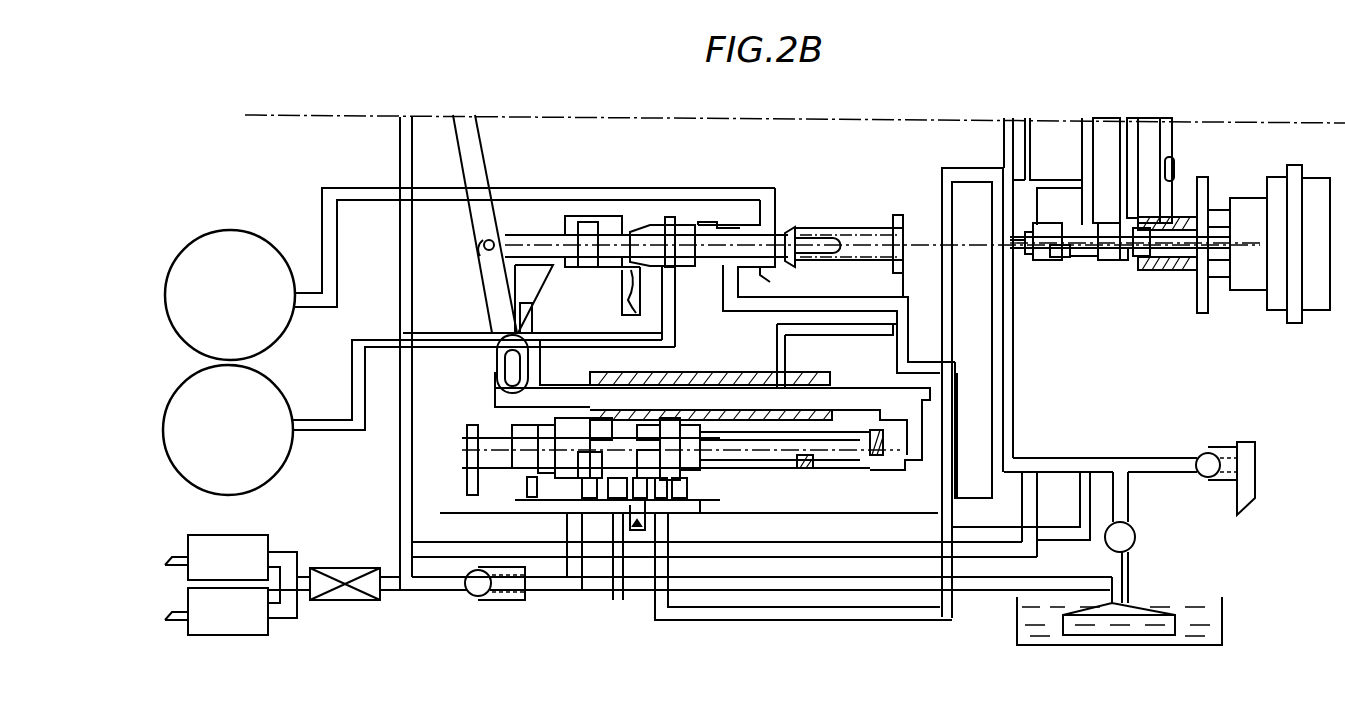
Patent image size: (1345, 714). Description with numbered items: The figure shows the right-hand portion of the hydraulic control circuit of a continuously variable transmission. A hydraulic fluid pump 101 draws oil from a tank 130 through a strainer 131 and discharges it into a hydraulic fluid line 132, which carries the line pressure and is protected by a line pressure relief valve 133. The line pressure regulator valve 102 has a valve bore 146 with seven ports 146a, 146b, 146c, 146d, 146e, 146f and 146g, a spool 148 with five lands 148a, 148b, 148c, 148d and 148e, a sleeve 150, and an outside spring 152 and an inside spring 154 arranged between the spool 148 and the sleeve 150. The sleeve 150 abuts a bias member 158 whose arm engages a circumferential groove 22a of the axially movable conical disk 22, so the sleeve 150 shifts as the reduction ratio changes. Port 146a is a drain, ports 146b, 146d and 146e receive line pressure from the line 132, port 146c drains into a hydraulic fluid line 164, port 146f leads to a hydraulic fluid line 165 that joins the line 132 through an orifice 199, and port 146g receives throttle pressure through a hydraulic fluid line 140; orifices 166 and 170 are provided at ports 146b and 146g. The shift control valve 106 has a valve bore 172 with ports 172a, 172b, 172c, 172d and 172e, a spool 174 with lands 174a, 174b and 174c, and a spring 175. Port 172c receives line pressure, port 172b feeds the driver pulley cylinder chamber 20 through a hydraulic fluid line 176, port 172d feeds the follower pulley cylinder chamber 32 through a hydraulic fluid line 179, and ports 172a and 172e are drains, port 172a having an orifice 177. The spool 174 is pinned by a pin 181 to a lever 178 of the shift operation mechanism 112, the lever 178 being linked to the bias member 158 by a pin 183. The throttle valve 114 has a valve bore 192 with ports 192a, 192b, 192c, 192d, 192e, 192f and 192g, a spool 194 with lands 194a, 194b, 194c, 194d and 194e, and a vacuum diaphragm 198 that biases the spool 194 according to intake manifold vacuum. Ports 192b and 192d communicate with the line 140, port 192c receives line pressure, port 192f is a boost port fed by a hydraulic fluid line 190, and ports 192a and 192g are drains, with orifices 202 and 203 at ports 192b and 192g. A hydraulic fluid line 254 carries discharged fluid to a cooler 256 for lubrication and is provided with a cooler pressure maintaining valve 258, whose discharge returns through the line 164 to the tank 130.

The driver pulley cylinder chamber 20 is at (289, 462).
The axially movable conical disk 22 is at (545, 288).
The circumferential groove 22a is at (540, 300).
The follower pulley cylinder chamber 32 is at (285, 342).
The hydraulic fluid pump 101 is at (1138, 533).
The line pressure regulator valve 102 is at (462, 512).
The shift control valve 106 is at (792, 188).
The shift operation mechanism 112 is at (458, 270).
The throttle valve 114 is at (1163, 333).
The tank 130 is at (1224, 612).
The strainer 131 is at (1142, 603).
The hydraulic fluid line 132 is at (822, 512).
The line pressure relief valve 133 is at (1210, 452).
The hydraulic fluid line 140 is at (1067, 530).
The valve bore 146 is at (535, 462).
The port 146a is at (490, 470).
The port 146b is at (528, 486).
The port 146c is at (570, 430).
The port 146d is at (590, 480).
The port 146e is at (620, 482).
The port 146f is at (655, 482).
The port 146g is at (683, 445).
The spool 148 is at (478, 462).
The land 148a is at (496, 482).
The land 148b is at (476, 446).
The land 148c is at (605, 440).
The land 148d is at (648, 445).
The land 148e is at (634, 491).
The sleeve 150 is at (866, 456).
The spring 152 is at (760, 440).
The spring 154 is at (846, 462).
The bias member 158 is at (990, 396).
The hydraulic fluid line 164 is at (577, 600).
The hydraulic fluid line 165 is at (695, 622).
The orifice 166 is at (540, 498).
The orifice 170 is at (705, 482).
The valve bore 172 is at (840, 228).
The port 172a is at (630, 275).
The port 172b is at (672, 272).
The port 172c is at (720, 296).
The port 172d is at (767, 283).
The port 172e is at (895, 278).
The spool 174 is at (527, 237).
The land 174a is at (588, 238).
The land 174b is at (688, 242).
The land 174c is at (786, 234).
The spring 175 is at (890, 229).
The hydraulic fluid line 176 is at (398, 346).
The orifice 177 is at (638, 304).
The lever 178 is at (470, 157).
The hydraulic fluid line 179 is at (385, 201).
The pin 181 is at (484, 243).
The pin 183 is at (497, 380).
The hydraulic fluid line 190 is at (1130, 140).
The valve bore 192 is at (1083, 228).
The port 192a is at (1025, 255).
The port 192b is at (1042, 262).
The port 192c is at (1062, 283).
The port 192d is at (1085, 260).
The port 192e is at (1106, 263).
The port 192f is at (1136, 291).
The port 192g is at (1166, 273).
The spool 194 is at (1040, 249).
The land 194a is at (1035, 240).
The land 194b is at (1030, 241).
The land 194c is at (1118, 135).
The land 194d is at (1148, 220).
The land 194e is at (1200, 215).
The vacuum diaphragm 198 is at (1313, 178).
The orifice 199 is at (636, 540).
The orifice 202 is at (1040, 216).
The orifice 203 is at (1175, 168).
The hydraulic fluid line 254 is at (403, 268).
The cooler 256 is at (352, 568).
The cooler pressure maintaining valve 258 is at (468, 592).